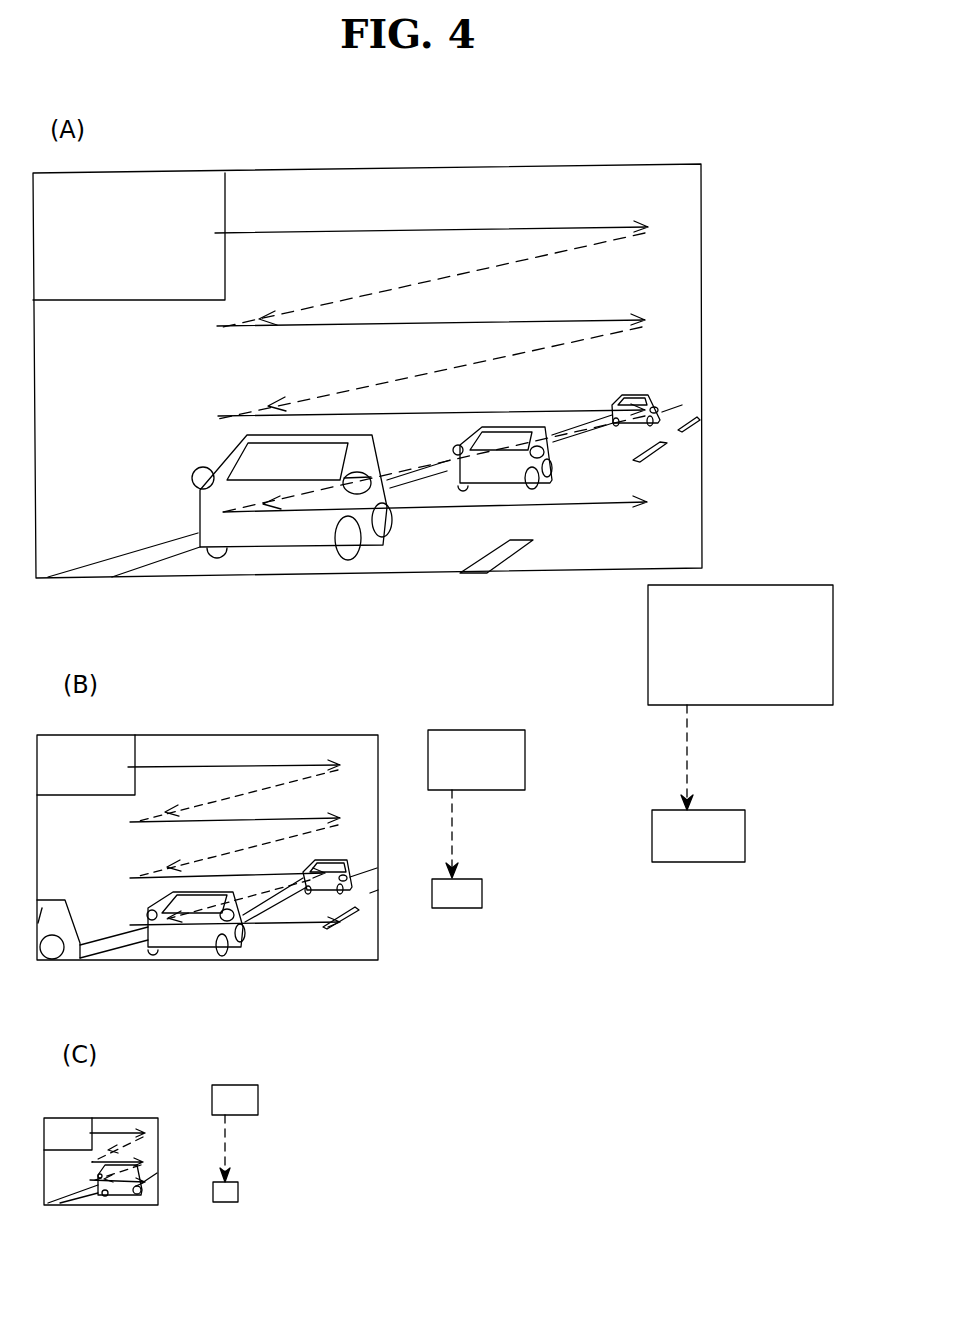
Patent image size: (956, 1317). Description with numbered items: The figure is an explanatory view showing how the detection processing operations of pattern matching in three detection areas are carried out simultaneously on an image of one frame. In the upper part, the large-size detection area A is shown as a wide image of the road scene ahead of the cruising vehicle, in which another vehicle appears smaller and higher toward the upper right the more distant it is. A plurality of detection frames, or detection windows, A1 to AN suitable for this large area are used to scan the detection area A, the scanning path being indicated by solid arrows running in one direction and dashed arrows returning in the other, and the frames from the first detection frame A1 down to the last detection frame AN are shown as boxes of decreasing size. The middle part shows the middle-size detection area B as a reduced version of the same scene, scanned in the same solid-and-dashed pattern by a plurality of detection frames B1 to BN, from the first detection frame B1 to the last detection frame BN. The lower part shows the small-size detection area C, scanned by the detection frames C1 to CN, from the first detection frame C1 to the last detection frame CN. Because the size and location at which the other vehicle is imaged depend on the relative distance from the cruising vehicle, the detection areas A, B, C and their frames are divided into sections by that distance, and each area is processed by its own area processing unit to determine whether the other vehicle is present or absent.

The detection area A is at (473, 165).
The detection frame A1 is at (167, 183).
The detection frame AN is at (717, 863).
The detection area B is at (248, 733).
The detection frame B1 is at (105, 750).
The detection frame BN is at (470, 910).
The detection area C is at (140, 1118).
The detection frame C1 is at (65, 1132).
The detection frame CN is at (240, 1190).